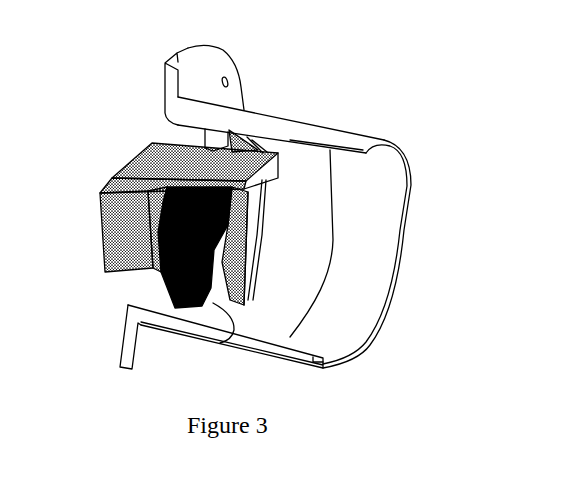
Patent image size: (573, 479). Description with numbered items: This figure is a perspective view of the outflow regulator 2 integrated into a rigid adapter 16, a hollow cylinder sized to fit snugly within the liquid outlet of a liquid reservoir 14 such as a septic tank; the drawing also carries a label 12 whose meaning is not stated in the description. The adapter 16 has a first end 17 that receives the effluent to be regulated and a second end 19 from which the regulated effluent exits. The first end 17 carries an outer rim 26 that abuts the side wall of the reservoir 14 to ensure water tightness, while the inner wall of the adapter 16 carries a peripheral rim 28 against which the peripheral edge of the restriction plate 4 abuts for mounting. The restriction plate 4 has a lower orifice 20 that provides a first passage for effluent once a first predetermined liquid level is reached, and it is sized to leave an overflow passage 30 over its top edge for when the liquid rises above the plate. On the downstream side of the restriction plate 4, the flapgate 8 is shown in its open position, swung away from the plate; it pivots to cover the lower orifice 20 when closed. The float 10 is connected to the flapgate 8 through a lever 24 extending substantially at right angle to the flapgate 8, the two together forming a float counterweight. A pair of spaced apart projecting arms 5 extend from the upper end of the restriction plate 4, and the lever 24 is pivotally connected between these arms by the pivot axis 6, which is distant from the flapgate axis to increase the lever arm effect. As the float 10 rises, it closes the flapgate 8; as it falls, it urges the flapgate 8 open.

The outflow regulator 2 is at (133, 77).
The restriction plate 4 is at (138, 298).
The projecting arms 5 is at (153, 252).
The pivot axis 6 is at (240, 212).
The flapgate 8 is at (237, 281).
The float 10 is at (101, 211).
The ring 12 is at (380, 268).
The liquid reservoir 14 is at (102, 115).
The rigid adapter 16 is at (275, 120).
The first end 17 is at (152, 277).
The second end 19 is at (367, 365).
The lower orifice 20 is at (200, 307).
The lever 24 is at (143, 163).
The outer rim 26 is at (213, 70).
The peripheral rim 28 is at (177, 310).
The overflow passage 30 is at (203, 141).